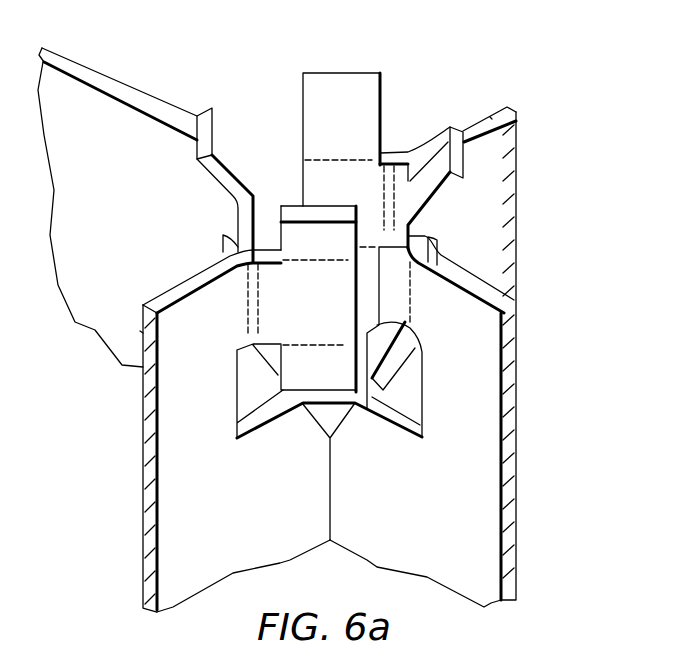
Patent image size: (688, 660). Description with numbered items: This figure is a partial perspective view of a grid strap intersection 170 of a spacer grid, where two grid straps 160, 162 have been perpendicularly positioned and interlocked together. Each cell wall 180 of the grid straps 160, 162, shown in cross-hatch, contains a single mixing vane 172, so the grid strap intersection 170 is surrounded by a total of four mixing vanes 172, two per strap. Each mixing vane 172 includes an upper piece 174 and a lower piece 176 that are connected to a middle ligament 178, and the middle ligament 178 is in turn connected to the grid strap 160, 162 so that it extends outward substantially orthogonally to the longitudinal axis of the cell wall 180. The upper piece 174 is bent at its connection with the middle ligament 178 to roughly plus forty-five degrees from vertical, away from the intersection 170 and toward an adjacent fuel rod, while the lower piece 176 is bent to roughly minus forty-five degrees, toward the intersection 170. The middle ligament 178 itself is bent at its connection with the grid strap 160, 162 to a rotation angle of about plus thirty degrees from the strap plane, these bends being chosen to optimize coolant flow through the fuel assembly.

The grid strap 160 is at (127, 120).
The grid strap 162 is at (141, 331).
The grid strap intersection 170 is at (386, 397).
The mixing vane 172 is at (234, 122).
The upper piece 174 is at (368, 128).
The lower piece 176 is at (365, 285).
The middle ligament 178 is at (240, 228).
The cell wall 180 is at (91, 303).